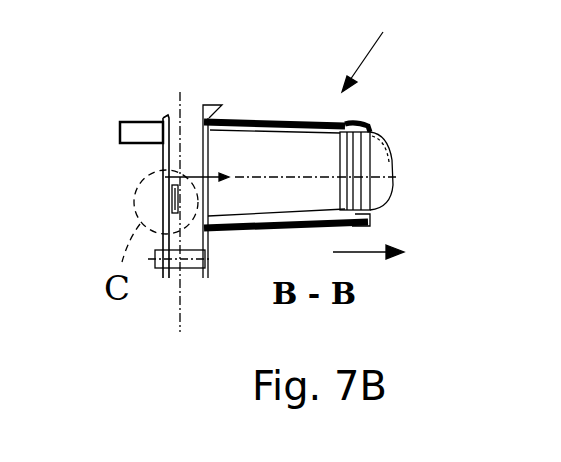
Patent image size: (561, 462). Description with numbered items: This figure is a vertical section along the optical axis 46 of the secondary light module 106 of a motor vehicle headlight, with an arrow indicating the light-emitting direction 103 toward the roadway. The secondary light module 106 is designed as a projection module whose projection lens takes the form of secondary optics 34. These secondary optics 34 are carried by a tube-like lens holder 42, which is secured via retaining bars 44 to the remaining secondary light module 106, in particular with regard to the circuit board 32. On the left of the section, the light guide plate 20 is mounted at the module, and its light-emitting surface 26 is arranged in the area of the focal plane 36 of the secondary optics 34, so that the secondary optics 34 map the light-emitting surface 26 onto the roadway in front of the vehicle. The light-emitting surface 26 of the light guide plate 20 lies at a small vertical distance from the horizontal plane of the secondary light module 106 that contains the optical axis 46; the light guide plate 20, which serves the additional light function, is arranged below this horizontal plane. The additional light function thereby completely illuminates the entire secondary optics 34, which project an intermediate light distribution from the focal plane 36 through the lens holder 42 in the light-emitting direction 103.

The secondary light module 106 is at (379, 48).
The lens holder 42 is at (313, 152).
The optical axis 46 is at (270, 174).
The secondary optics 34 is at (378, 160).
The focal plane 36 is at (180, 108).
The circuit board 32 is at (162, 157).
The light guide plate 20 is at (168, 168).
The light-emitting surface 26 is at (178, 207).
The retaining bars 44 is at (165, 268).
The light-emitting direction 103 is at (370, 256).